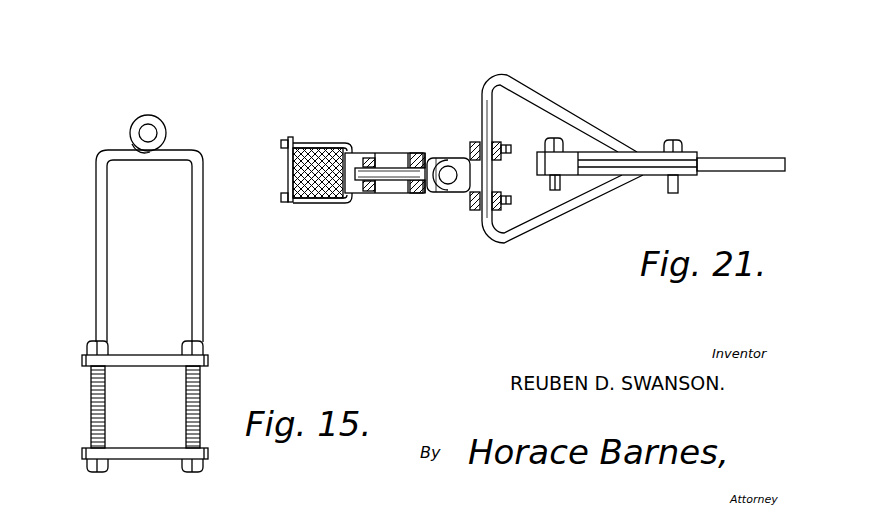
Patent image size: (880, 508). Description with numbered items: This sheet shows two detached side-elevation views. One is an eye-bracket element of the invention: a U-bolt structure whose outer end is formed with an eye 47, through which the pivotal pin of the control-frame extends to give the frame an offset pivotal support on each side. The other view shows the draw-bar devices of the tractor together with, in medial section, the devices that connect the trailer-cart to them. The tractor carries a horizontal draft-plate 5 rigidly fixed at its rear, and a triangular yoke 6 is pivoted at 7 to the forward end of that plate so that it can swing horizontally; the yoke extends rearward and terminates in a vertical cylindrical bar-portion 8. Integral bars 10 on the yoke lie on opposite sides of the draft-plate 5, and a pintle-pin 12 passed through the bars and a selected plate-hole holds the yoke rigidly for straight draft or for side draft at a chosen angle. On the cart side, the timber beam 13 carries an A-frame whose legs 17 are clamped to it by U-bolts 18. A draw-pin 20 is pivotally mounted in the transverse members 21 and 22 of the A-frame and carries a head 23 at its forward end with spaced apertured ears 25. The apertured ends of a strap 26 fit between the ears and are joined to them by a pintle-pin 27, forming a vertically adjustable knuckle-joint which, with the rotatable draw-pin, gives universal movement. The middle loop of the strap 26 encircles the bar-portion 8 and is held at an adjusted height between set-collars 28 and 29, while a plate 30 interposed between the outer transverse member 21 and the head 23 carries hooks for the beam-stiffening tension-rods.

In FIG. 21, the draft-plate 5 is at (712, 156).
In FIG. 21, the triangular yoke 6 is at (579, 112).
In FIG. 21, the pivot 7 is at (670, 187).
In FIG. 21, the cylindrical bar-portion 8 is at (486, 119).
In FIG. 21, the integral bars 10 is at (550, 148).
In FIG. 21, the pintle-pin 12 is at (552, 186).
In FIG. 21, the beam 13 is at (326, 188).
In FIG. 21, the legs 17 is at (392, 192).
In FIG. 21, the U-bolts 18 is at (312, 146).
In FIG. 21, the draw-pin 20 is at (395, 168).
In FIG. 21, the outer transverse member 21 is at (421, 195).
In FIG. 21, the transverse member 22 is at (368, 192).
In FIG. 21, the head 23 is at (428, 195).
In FIG. 21, the apertured ears 25 is at (448, 160).
In FIG. 21, the strap 26 is at (474, 212).
In FIG. 21, the pintle-pin 27 is at (451, 177).
In FIG. 21, the set-collar 28 is at (497, 142).
In FIG. 21, the set-collar 29 is at (505, 208).
In FIG. 21, the plate 30 is at (418, 155).
In FIG. 15, the eye 47 is at (164, 129).